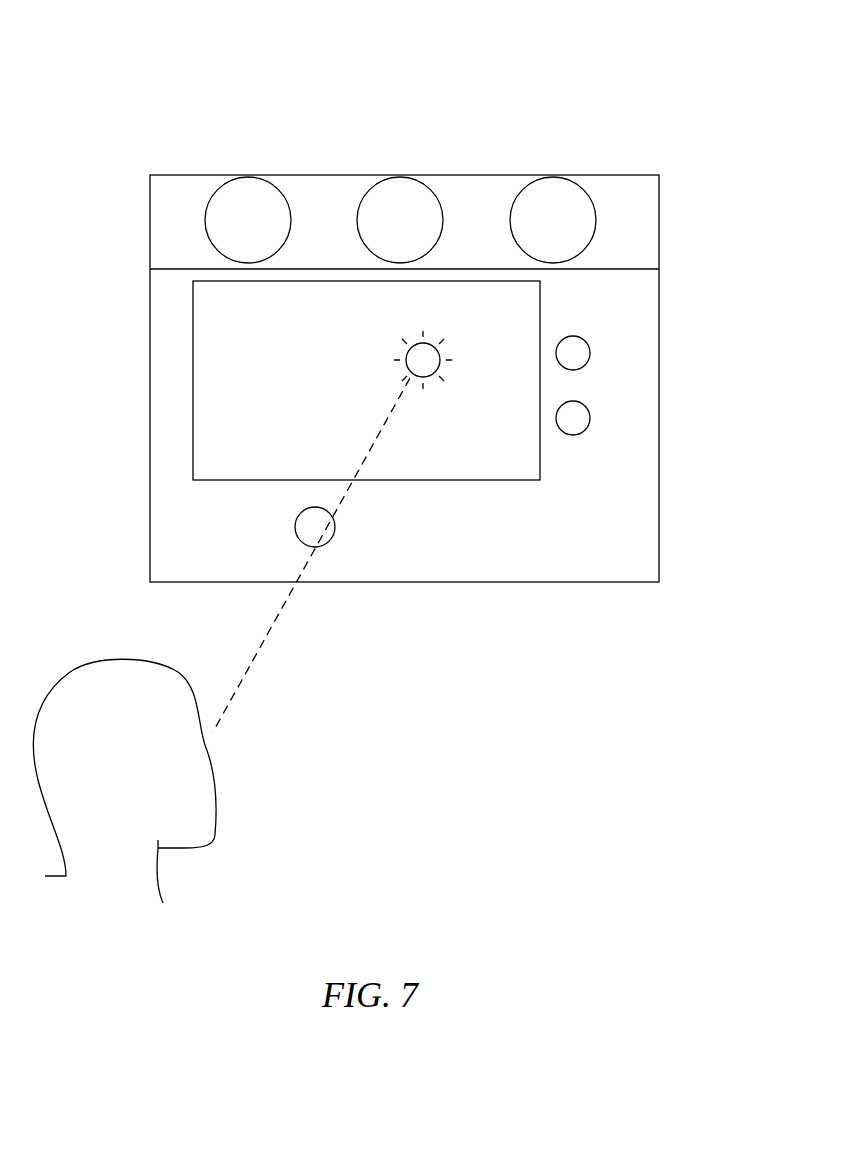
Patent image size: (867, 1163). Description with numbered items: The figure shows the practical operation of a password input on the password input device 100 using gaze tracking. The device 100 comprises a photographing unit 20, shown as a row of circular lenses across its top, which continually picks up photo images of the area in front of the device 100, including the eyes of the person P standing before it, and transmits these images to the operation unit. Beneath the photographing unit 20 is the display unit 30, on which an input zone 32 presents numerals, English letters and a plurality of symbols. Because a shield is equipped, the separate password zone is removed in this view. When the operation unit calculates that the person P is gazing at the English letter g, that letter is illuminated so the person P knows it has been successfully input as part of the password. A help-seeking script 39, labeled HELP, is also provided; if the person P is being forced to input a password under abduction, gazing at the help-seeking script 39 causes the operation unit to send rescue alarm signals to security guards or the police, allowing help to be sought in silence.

The password input device 100 is at (198, 152).
The photographing unit 20 is at (643, 221).
The display unit 30 is at (643, 393).
The input zone 32 is at (203, 442).
The help-seeking script 39 is at (316, 548).
The person P is at (232, 803).